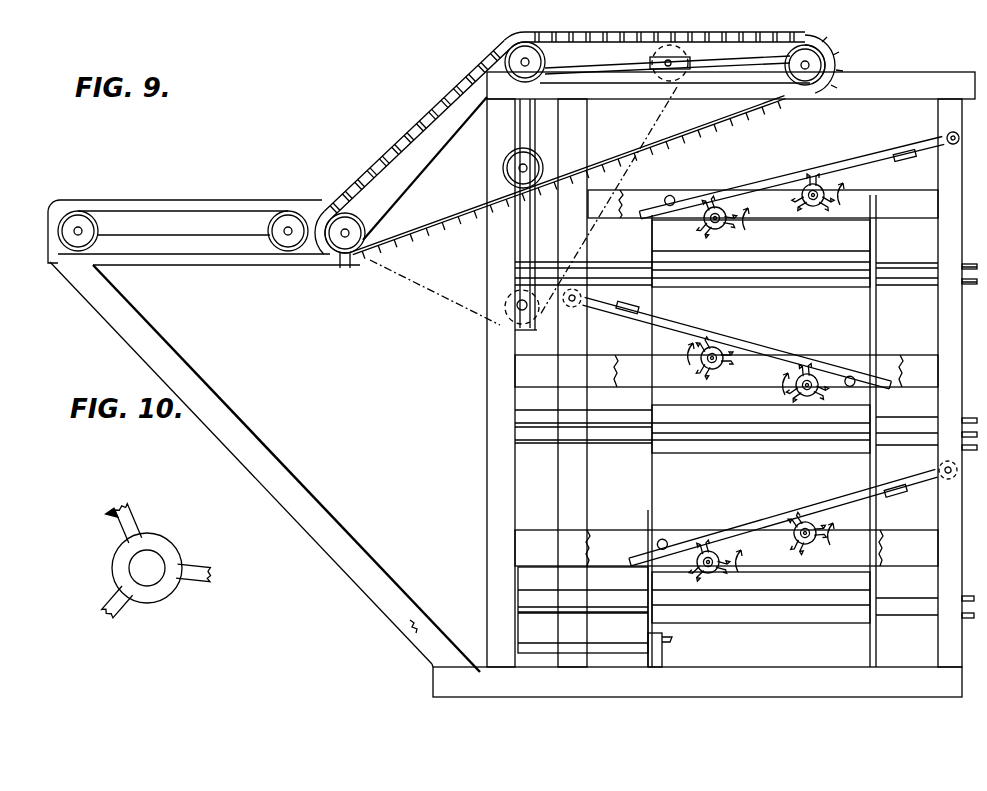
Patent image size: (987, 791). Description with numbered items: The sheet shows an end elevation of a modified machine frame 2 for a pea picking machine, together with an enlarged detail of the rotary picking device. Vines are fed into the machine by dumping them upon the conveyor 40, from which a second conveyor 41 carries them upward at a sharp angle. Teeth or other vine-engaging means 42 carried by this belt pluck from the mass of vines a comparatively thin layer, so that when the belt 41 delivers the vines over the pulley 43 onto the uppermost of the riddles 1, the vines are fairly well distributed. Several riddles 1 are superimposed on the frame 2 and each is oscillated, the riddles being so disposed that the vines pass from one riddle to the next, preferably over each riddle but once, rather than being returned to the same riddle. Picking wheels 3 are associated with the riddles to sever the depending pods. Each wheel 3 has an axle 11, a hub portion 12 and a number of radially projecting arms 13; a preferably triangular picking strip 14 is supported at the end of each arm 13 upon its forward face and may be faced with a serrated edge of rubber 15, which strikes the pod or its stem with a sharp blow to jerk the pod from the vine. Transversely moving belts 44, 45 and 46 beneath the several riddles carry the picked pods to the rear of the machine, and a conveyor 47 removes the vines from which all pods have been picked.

In FIG. 9, the riddle 1 is at (858, 156).
In FIG. 9, the machine frame 2 is at (960, 337).
In FIG. 9, the picking wheel 3 is at (722, 228).
In FIG. 10, the axle 11 is at (155, 565).
In FIG. 10, the hub portion 12 is at (175, 548).
In FIG. 10, the radially projecting arm 13 is at (130, 514).
In FIG. 10, the picking strip 14 is at (112, 505).
In FIG. 10, the serrated rubber edge 15 is at (100, 515).
In FIG. 9, the conveyor 40 is at (210, 254).
In FIG. 9, the conveyor 41 is at (398, 158).
In FIG. 9, the teeth 42 is at (395, 160).
In FIG. 9, the pulley 43 is at (805, 86).
In FIG. 9, the transversely moving belt 44 is at (770, 262).
In FIG. 9, the transversely moving belt 45 is at (705, 418).
In FIG. 9, the transversely moving belt 46 is at (800, 598).
In FIG. 9, the conveyor 47 is at (585, 622).